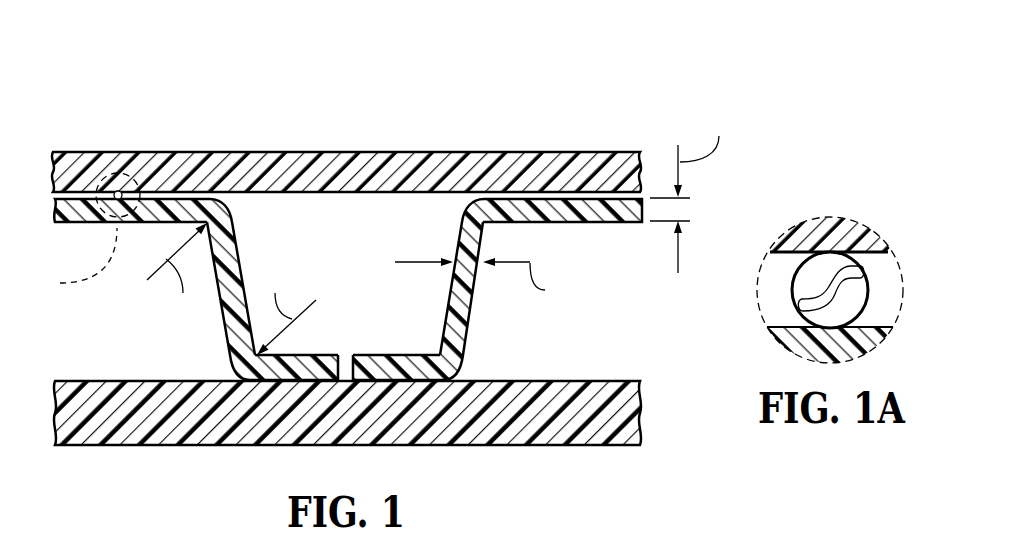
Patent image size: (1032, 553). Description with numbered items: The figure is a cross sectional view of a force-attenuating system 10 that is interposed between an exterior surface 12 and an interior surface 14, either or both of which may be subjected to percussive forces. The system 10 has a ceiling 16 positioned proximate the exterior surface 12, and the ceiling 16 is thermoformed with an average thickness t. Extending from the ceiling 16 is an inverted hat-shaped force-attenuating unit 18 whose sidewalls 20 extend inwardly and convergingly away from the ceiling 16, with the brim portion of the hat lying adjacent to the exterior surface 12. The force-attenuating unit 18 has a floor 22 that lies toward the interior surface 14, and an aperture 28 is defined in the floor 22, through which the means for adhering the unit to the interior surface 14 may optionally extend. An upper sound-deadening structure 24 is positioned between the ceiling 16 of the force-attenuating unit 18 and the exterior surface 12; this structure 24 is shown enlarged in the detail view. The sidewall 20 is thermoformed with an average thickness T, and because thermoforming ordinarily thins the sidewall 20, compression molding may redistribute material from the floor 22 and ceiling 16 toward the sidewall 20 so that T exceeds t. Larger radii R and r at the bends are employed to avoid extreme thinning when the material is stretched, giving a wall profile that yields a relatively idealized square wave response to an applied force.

In FIG. 1, the force-attenuating system 10 is at (570, 60).
In FIG. 1, the exterior surface 12 is at (420, 152).
In FIG. 1, the interior surface 14 is at (548, 381).
In FIG. 1, the ceiling 16 is at (358, 289).
In FIG. 1, the inverted hat-shaped force-attenuating unit 18 is at (338, 226).
In FIG. 1, the sidewall 20 is at (224, 320).
In FIG. 1, the floor 22 is at (381, 355).
In FIG. 1, the upper sound-deadening structure 24 is at (119, 191).
In FIG. 1A, the upper sound-deadening structure 24 is at (830, 292).
In FIG. 1, the aperture 28 is at (349, 366).